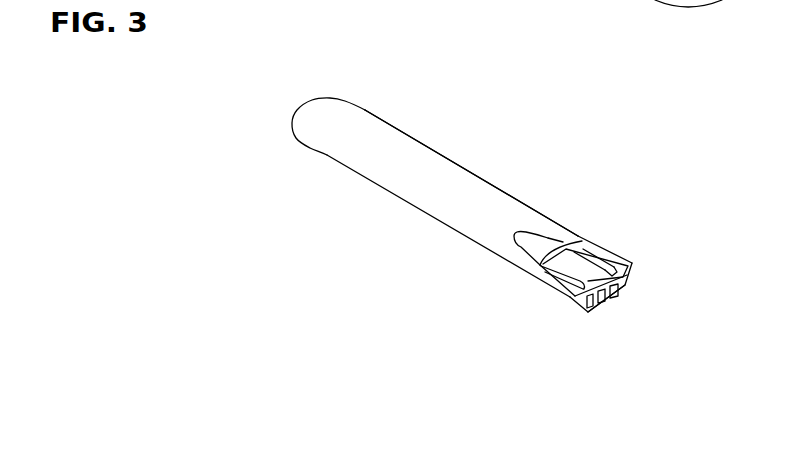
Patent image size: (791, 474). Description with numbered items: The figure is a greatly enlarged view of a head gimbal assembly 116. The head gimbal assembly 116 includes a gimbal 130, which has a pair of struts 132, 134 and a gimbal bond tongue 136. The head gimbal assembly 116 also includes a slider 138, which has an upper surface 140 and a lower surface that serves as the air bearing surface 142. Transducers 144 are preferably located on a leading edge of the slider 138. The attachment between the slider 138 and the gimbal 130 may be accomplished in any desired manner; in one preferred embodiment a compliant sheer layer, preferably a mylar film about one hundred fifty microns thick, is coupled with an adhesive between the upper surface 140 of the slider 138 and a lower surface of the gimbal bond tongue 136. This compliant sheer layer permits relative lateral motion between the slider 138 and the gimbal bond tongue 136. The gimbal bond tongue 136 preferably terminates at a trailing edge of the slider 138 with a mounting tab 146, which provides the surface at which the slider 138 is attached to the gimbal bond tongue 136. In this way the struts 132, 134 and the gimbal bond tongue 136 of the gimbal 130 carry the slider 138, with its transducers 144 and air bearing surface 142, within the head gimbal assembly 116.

The head gimbal assembly 116 is at (458, 138).
The gimbal 130 is at (383, 113).
The strut 132 is at (550, 283).
The strut 134 is at (588, 272).
The gimbal bond tongue 136 is at (614, 272).
The slider 138 is at (602, 305).
The upper surface 140 is at (586, 257).
The air bearing surface 142 is at (582, 308).
The transducers 144 is at (624, 287).
The mounting tab 146 is at (554, 261).